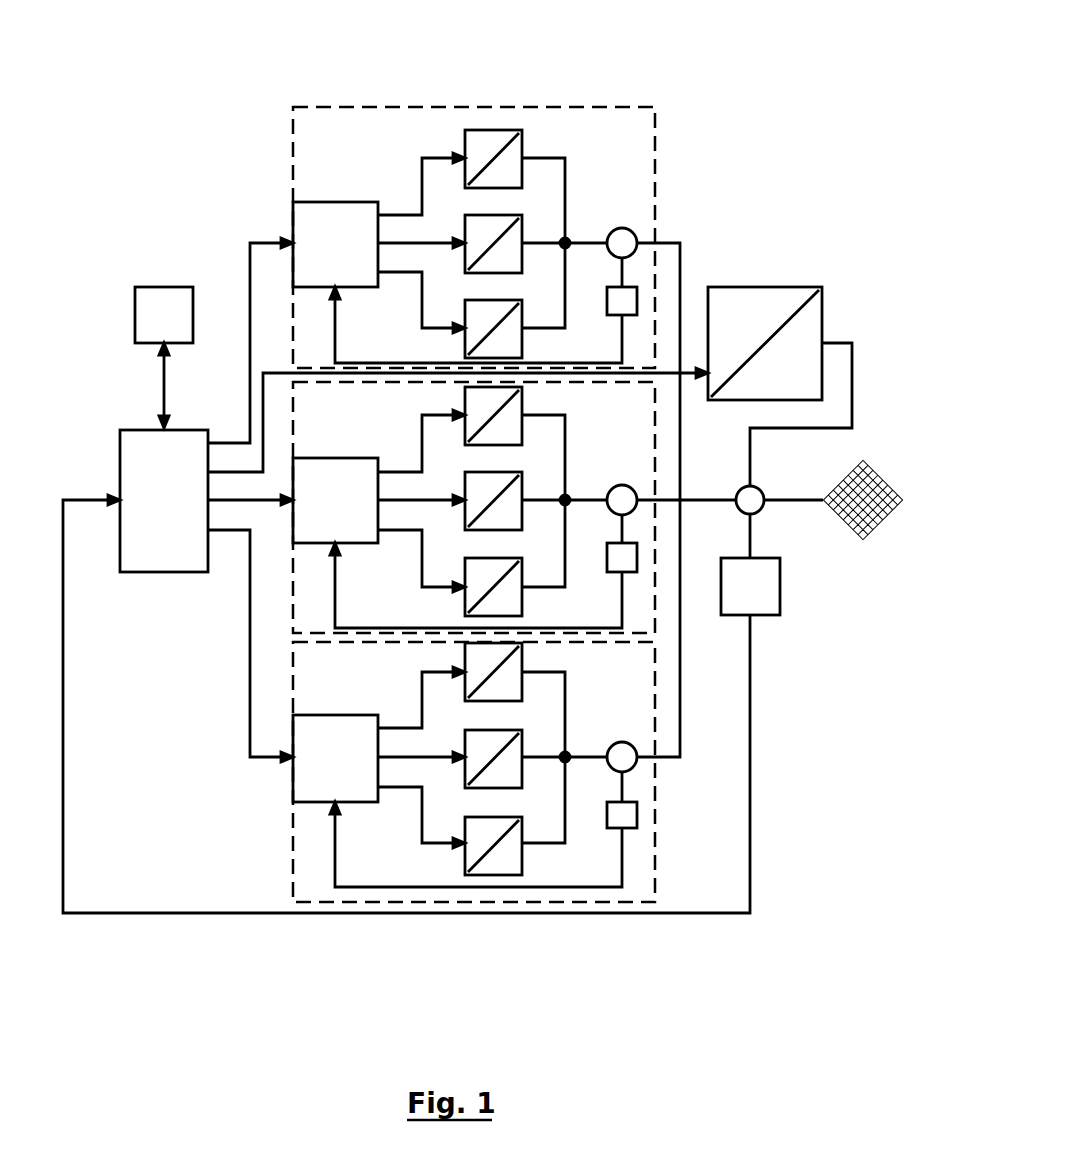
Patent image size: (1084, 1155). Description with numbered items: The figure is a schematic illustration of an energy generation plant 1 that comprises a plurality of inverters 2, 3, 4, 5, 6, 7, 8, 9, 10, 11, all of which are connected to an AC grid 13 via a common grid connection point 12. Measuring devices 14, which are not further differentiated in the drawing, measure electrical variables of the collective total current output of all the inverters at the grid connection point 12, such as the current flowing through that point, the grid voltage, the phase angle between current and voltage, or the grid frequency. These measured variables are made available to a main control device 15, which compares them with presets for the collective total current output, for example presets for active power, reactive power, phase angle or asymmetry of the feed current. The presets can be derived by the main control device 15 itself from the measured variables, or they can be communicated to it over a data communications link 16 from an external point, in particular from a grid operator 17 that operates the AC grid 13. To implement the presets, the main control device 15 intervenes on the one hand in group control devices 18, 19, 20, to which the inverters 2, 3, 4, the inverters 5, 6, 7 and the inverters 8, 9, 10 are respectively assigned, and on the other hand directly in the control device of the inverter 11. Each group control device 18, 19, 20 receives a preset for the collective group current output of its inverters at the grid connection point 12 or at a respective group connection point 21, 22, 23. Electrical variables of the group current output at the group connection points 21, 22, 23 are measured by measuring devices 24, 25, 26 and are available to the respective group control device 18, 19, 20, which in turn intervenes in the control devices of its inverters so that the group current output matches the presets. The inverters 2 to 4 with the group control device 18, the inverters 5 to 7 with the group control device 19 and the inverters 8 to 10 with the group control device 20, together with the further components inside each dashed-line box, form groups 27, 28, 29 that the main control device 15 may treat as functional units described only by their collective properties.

The energy generation plant 1 is at (740, 120).
The inverter 2 is at (525, 137).
The inverter 3 is at (522, 232).
The inverter 4 is at (522, 318).
The inverter 5 is at (523, 399).
The inverter 6 is at (522, 488).
The inverter 7 is at (522, 573).
The inverter 8 is at (523, 658).
The inverter 9 is at (522, 743).
The inverter 10 is at (523, 857).
The inverter 11 is at (825, 315).
The grid connection point 12 is at (762, 488).
The AC grid 13 is at (882, 478).
The measuring devices 14 is at (780, 592).
The main control device 15 is at (157, 572).
The data communications link 16 is at (162, 385).
The grid operator 17 is at (153, 287).
The group control device 18 is at (330, 202).
The group control device 19 is at (290, 525).
The group control device 20 is at (292, 775).
The group connection point 21 is at (633, 232).
The group connection point 22 is at (633, 490).
The group connection point 23 is at (633, 747).
The measuring device 24 is at (637, 298).
The measuring device 25 is at (637, 555).
The measuring device 26 is at (637, 813).
The group 27 is at (490, 107).
The group 28 is at (417, 642).
The group 29 is at (452, 902).